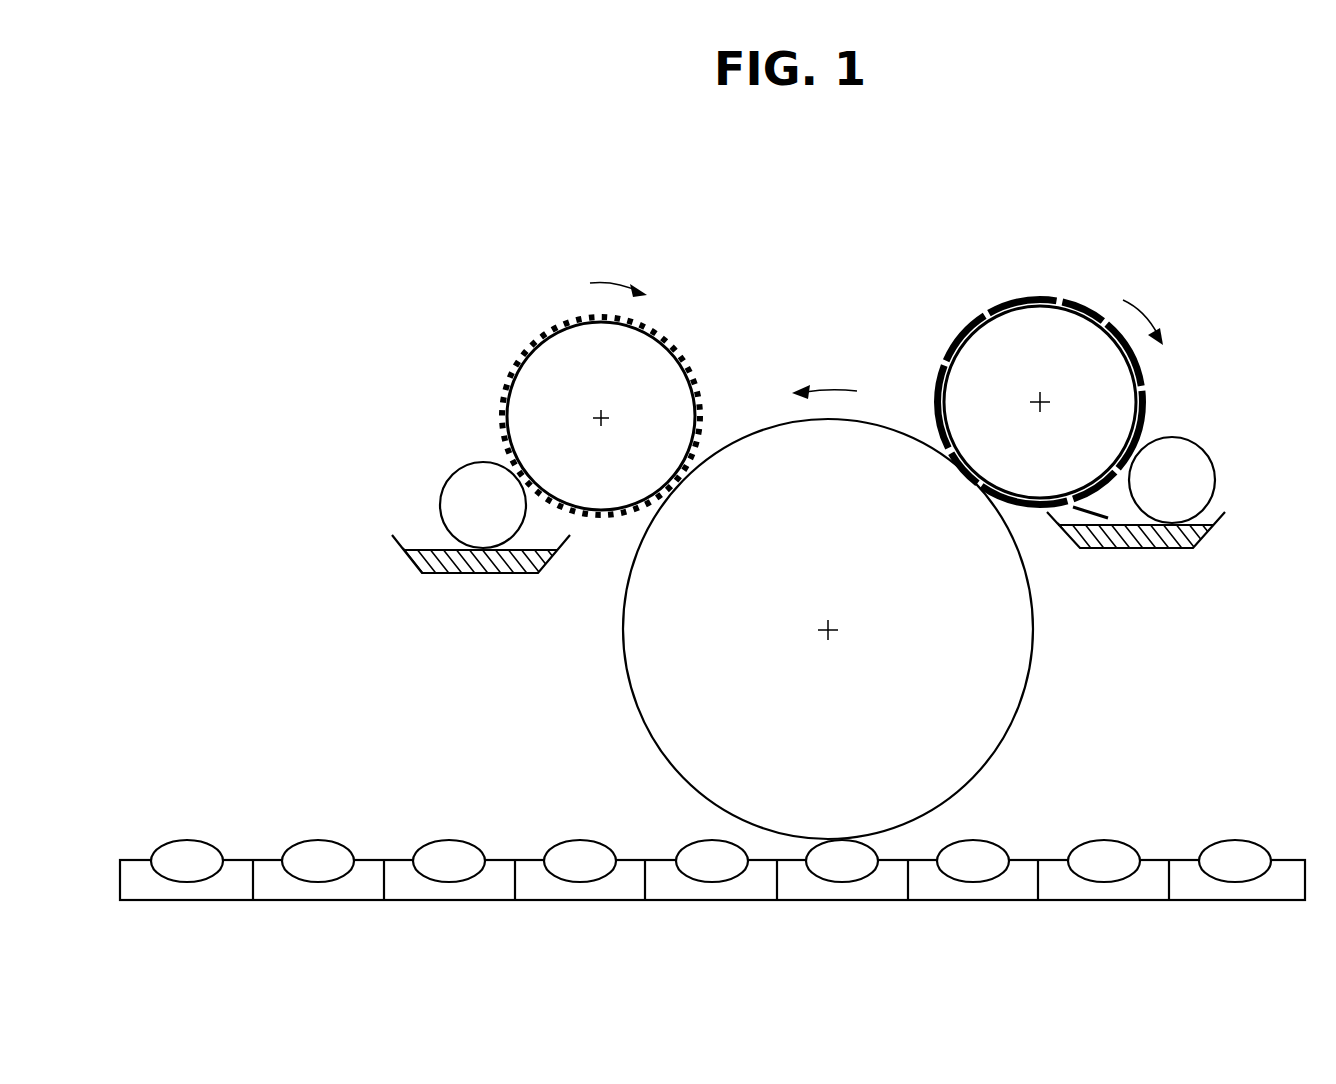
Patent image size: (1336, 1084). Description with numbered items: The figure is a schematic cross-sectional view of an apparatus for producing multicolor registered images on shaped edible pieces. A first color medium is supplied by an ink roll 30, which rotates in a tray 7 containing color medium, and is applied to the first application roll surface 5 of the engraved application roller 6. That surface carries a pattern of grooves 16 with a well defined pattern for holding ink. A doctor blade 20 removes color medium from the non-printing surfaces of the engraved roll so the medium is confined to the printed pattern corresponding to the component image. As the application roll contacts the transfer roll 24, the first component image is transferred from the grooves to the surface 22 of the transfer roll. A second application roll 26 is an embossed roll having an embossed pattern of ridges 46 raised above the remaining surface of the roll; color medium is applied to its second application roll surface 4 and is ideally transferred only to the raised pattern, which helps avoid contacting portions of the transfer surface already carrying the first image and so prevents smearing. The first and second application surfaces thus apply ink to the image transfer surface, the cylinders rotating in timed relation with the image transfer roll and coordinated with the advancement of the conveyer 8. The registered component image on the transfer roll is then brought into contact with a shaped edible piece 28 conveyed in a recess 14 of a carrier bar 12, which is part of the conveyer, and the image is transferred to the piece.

The second application roll surface 4 is at (475, 345).
The first application roll surface 5 is at (1062, 358).
The engraved application roller 6 is at (1003, 343).
The tray 7 is at (1177, 548).
The conveyer 8 is at (712, 851).
The carrier bar 12 is at (490, 890).
The recess 14 is at (711, 861).
The pattern of grooves 16 is at (1213, 438).
The doctor blade 20 is at (1095, 517).
The surface of transfer roll 22 is at (828, 568).
The transfer roll 24 is at (812, 565).
The second application roll 26 is at (607, 371).
The shaped edible piece 28 is at (455, 840).
The ink roll 30 is at (1197, 462).
The embossed pattern of ridges 46 is at (692, 363).